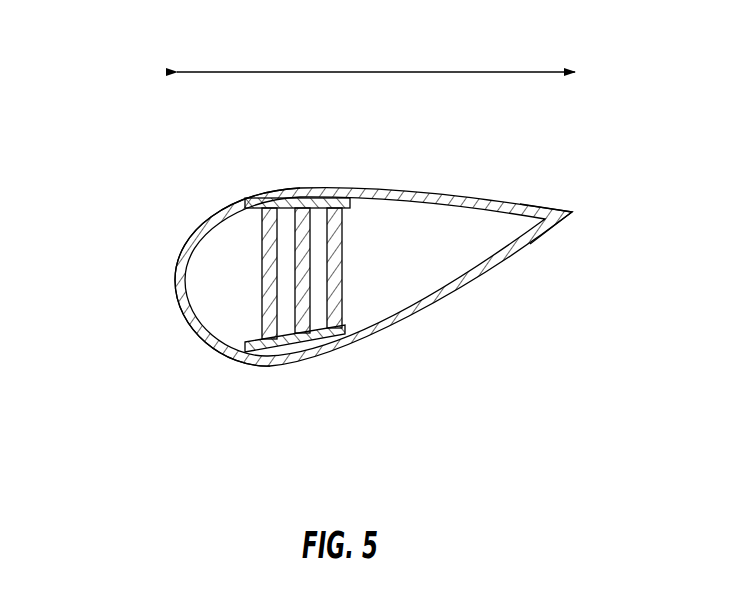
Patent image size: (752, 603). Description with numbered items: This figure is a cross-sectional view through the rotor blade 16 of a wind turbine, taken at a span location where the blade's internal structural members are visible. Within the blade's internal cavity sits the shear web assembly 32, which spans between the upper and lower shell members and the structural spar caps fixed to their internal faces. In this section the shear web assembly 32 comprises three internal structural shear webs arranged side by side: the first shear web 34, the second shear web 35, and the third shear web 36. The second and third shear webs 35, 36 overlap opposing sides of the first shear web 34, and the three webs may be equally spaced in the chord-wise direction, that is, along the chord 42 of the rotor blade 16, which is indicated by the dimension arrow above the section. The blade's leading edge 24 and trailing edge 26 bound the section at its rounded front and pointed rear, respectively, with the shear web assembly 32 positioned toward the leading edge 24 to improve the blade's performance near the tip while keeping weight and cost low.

The rotor blade 16 is at (352, 253).
The leading edge 24 is at (160, 277).
The trailing edge 26 is at (565, 225).
The shear web assembly 32 is at (252, 273).
The first shear web 34 is at (324, 235).
The second shear web 35 is at (262, 320).
The third shear web 36 is at (333, 308).
The chord 42 is at (442, 70).